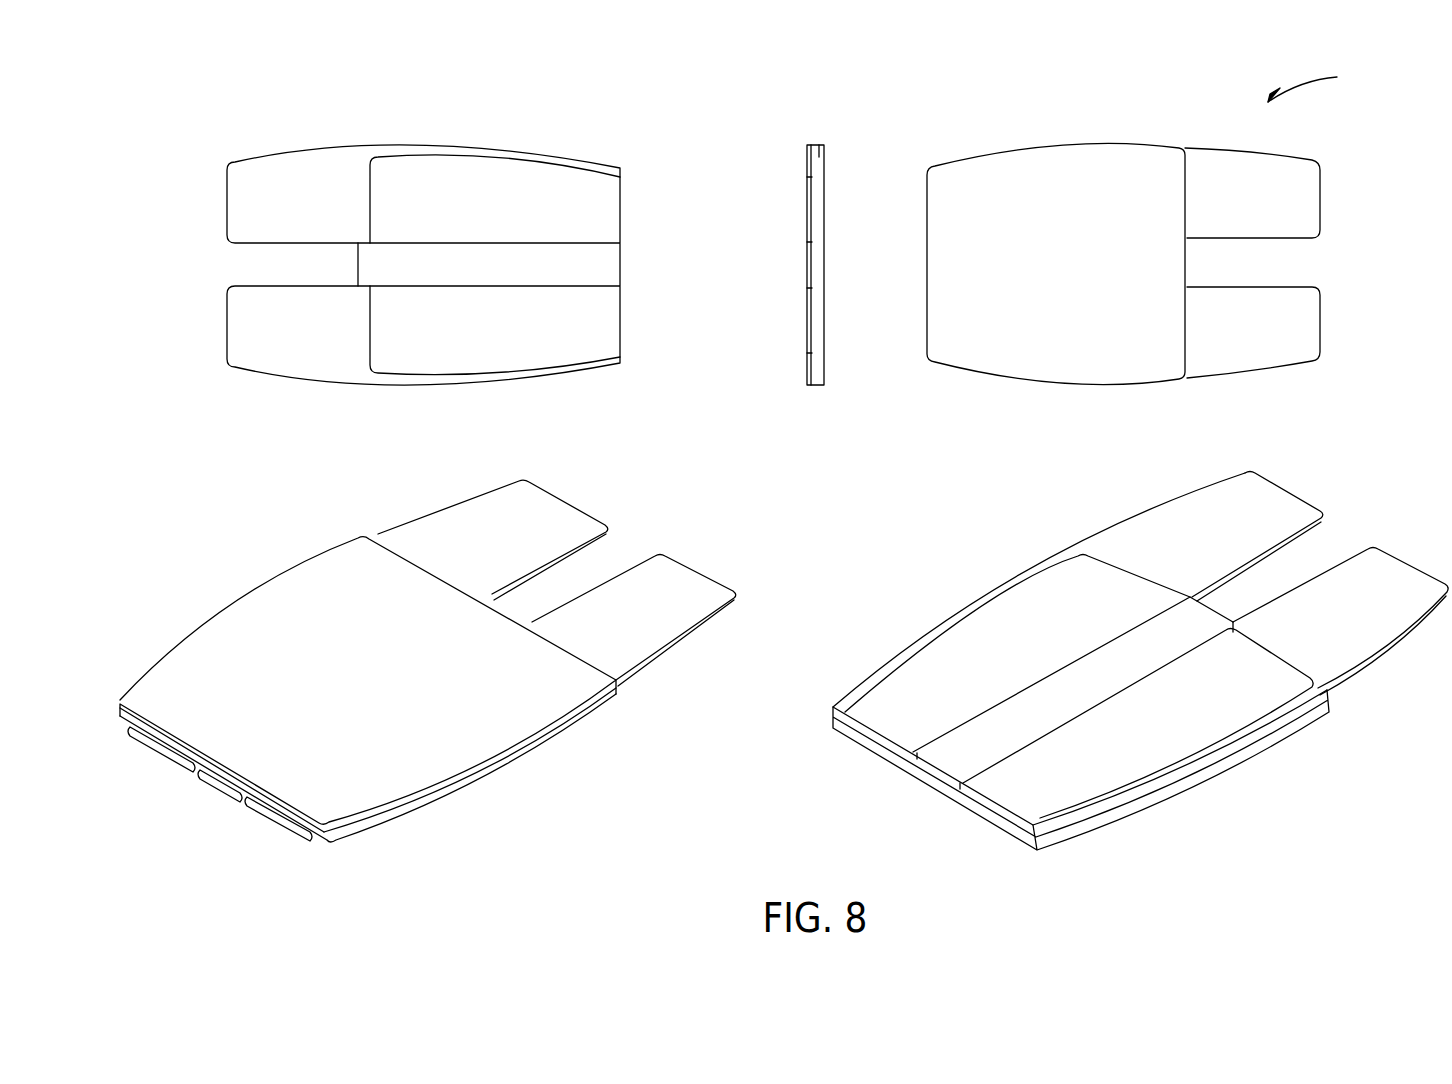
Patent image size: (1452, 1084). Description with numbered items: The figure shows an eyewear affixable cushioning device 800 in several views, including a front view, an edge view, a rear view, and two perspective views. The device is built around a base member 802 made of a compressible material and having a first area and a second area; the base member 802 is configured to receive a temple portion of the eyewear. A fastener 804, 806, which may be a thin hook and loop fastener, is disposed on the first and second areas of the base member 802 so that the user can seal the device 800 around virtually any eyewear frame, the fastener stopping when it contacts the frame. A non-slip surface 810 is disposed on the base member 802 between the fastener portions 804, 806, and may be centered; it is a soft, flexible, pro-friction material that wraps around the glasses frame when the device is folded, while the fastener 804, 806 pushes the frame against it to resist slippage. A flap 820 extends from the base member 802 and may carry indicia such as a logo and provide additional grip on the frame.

The eyewear affixable cushioning device 800 is at (1324, 81).
The base member 802 is at (818, 157).
The fastener 804 is at (408, 173).
The fastener 806 is at (420, 357).
The non-slip surface 810 is at (610, 263).
The flap 820 is at (242, 332).